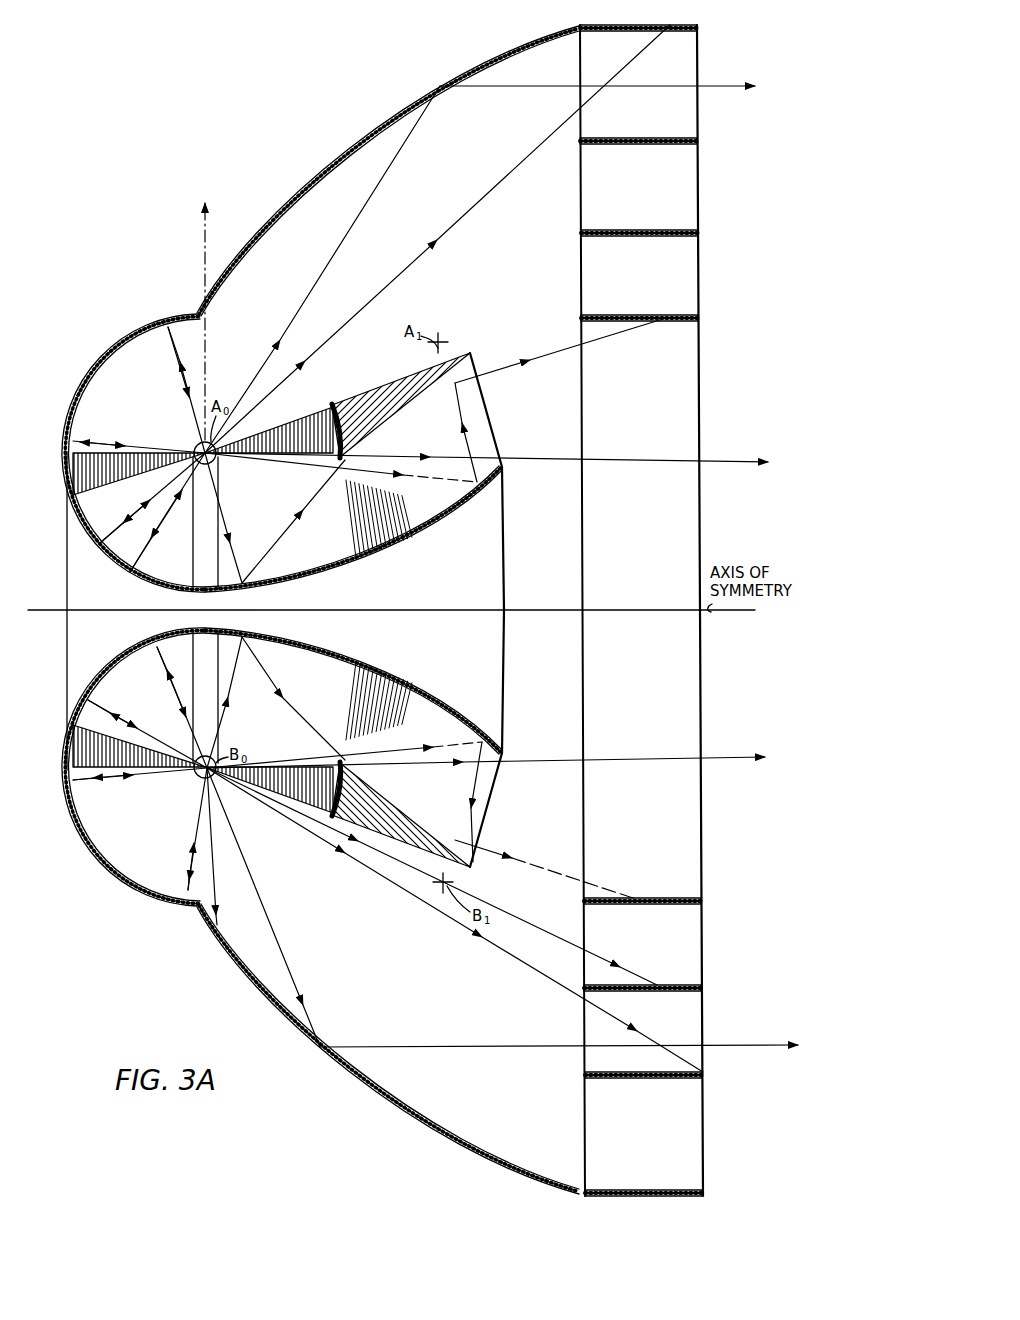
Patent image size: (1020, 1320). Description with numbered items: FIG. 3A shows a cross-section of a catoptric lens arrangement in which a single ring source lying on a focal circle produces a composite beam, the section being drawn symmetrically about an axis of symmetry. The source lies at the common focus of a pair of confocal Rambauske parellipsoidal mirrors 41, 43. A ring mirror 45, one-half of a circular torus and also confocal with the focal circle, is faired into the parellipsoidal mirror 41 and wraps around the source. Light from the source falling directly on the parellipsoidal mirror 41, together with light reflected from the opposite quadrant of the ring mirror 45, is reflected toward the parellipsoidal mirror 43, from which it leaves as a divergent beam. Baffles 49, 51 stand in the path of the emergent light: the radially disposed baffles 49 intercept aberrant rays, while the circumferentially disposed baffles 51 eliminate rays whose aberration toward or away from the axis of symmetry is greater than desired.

The parellipsoidal mirror 41 is at (392, 547).
The parellipsoidal mirror 43 is at (399, 415).
The ring mirror 45 is at (96, 378).
The baffles 49 is at (505, 556).
The baffles 51 is at (688, 31).